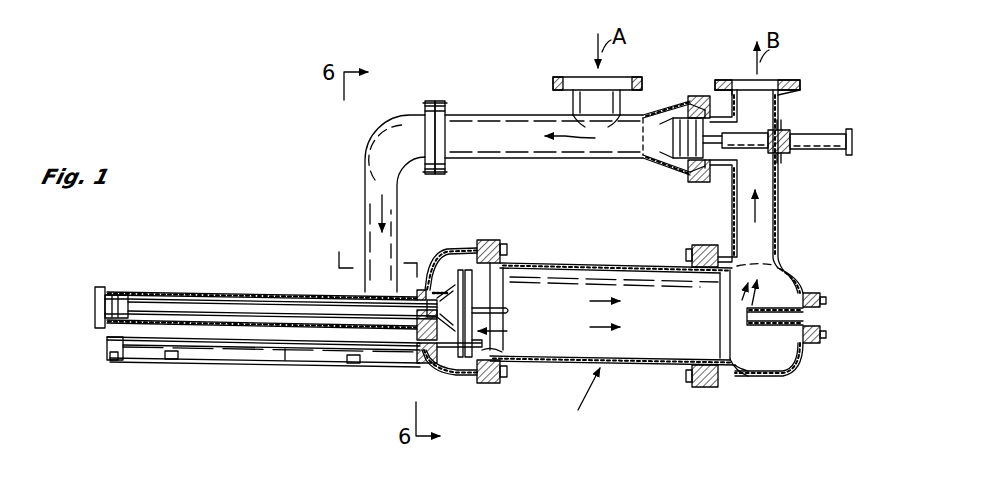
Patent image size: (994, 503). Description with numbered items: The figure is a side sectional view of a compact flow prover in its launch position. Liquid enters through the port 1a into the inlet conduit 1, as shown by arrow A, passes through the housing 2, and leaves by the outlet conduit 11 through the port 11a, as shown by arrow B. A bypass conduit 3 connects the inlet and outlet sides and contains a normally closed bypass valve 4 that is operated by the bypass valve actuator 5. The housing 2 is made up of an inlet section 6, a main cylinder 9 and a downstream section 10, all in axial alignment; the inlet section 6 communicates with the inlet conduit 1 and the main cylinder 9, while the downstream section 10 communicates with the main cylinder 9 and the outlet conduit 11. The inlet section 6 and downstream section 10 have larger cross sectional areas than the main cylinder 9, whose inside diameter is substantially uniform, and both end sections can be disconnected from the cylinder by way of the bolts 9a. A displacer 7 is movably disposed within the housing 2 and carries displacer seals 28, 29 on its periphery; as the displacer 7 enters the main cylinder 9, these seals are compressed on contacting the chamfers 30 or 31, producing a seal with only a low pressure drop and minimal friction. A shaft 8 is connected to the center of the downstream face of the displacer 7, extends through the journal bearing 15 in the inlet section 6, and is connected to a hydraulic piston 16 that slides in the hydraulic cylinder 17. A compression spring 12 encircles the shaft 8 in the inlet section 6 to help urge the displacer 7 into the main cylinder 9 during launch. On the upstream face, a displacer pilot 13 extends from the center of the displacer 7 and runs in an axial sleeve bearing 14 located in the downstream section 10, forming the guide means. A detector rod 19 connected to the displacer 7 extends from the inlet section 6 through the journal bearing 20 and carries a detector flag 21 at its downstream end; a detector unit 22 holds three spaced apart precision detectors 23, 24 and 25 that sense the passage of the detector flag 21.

The inlet conduit 1 is at (366, 196).
The port 1a is at (568, 78).
The housing 2 is at (589, 398).
The bypass conduit 3 is at (663, 106).
The bypass valve 4 is at (690, 165).
The bypass valve actuator 5 is at (830, 140).
The inlet section 6 is at (445, 368).
The displacer 7 is at (507, 331).
The shaft 8 is at (208, 293).
The main cylinder 9 is at (624, 364).
The bolts 9a is at (500, 248).
The downstream section 10 is at (772, 380).
The outlet conduit 11 is at (778, 214).
The port 11a is at (788, 80).
The compression spring 12 is at (438, 290).
The displacer pilot 13 is at (506, 307).
The axial sleeve bearing 14 is at (770, 312).
The journal bearing 15 is at (422, 290).
The hydraulic piston 16 is at (128, 291).
The hydraulic cylinder 17 is at (266, 293).
The detector rod 19 is at (285, 350).
The journal bearing 20 is at (424, 366).
The detector flag 21 is at (107, 345).
The detector unit 22 is at (236, 364).
The precision detector 23 is at (110, 362).
The precision detector 24 is at (172, 359).
The precision detector 25 is at (352, 363).
The displacer seal 28 is at (460, 272).
The displacer seal 29 is at (469, 272).
The chamfer 30 is at (510, 343).
The chamfer 31 is at (746, 366).